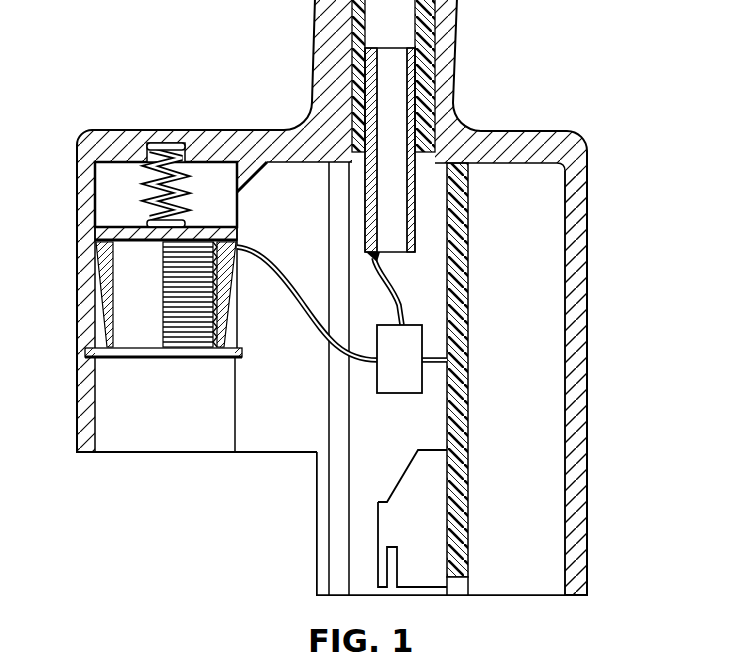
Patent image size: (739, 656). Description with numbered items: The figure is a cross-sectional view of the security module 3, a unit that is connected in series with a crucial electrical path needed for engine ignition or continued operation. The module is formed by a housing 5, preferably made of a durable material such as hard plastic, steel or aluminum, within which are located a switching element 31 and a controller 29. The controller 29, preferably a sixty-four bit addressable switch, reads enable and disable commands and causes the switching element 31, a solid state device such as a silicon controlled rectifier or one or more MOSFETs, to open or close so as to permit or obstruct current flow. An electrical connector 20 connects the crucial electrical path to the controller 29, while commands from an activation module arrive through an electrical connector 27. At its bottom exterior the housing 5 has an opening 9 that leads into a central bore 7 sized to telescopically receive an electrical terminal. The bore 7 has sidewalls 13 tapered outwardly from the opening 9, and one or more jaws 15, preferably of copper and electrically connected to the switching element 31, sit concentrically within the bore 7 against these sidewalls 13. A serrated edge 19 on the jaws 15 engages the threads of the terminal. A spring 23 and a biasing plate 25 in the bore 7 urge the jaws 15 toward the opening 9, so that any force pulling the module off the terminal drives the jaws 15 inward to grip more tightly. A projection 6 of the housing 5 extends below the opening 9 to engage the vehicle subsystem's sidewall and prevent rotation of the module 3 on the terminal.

The security module 3 is at (575, 64).
The housing 5 is at (575, 155).
The projection 6 is at (313, 563).
The central bore 7 is at (110, 200).
The opening 9 is at (128, 433).
The tapered sidewalls 13 is at (100, 334).
The jaws 15 is at (100, 259).
The serrated edge 19 is at (215, 300).
The electrical connector 20 is at (382, 47).
The spring 23 is at (162, 146).
The biasing plate 25 is at (203, 226).
The electrical connector 27 is at (405, 470).
The controller 29 is at (290, 280).
The switching element 31 is at (389, 369).